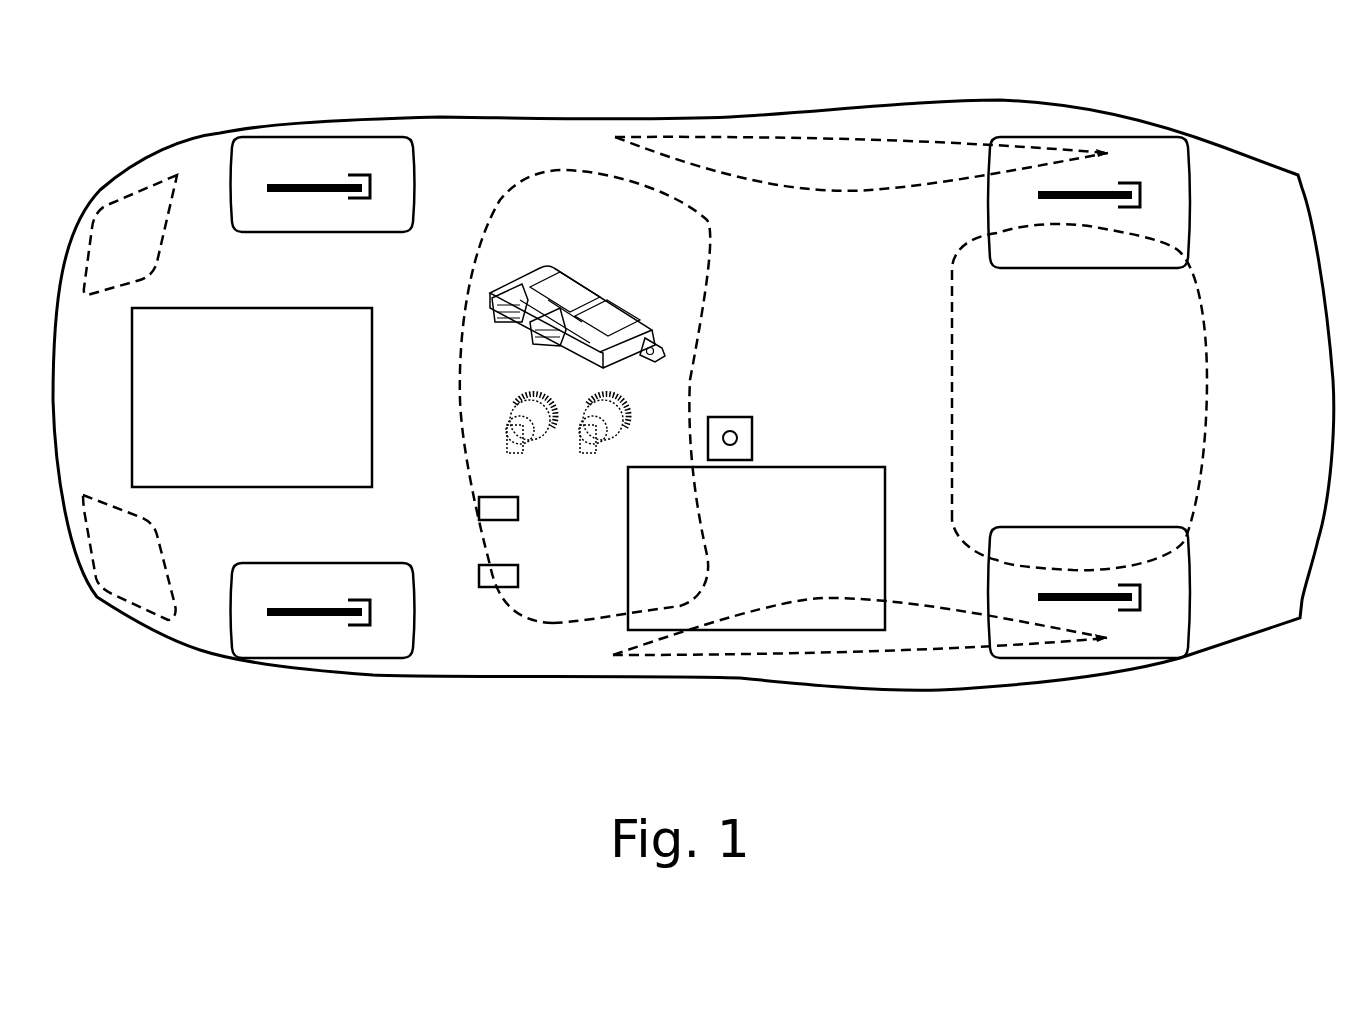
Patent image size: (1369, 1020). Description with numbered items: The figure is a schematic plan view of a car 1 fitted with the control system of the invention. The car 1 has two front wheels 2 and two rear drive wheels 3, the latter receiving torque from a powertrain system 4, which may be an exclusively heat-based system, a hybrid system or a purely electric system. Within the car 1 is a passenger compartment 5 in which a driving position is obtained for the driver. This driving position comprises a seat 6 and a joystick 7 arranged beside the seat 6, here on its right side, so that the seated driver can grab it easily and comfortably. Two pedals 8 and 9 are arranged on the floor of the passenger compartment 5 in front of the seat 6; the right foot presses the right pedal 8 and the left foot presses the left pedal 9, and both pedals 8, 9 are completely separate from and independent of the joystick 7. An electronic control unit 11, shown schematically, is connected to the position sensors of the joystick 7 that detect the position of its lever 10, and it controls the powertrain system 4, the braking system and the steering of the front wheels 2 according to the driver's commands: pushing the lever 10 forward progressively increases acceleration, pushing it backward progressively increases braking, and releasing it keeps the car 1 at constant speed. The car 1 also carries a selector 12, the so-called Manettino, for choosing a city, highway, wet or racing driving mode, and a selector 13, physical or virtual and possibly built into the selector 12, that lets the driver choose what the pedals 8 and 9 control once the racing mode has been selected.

The car 1 is at (703, 434).
The front wheels 2 is at (302, 157).
The rear drive wheels 3 is at (1172, 155).
The powertrain system 4 is at (143, 147).
The passenger compartment 5 is at (728, 96).
The seat 6 is at (790, 533).
The joystick 7 is at (752, 388).
The right pedal 8 is at (495, 505).
The left pedal 9 is at (488, 575).
The lever 10 is at (731, 431).
The electronic control unit 11 is at (575, 313).
The selector 12 is at (525, 430).
The selector 13 is at (597, 428).